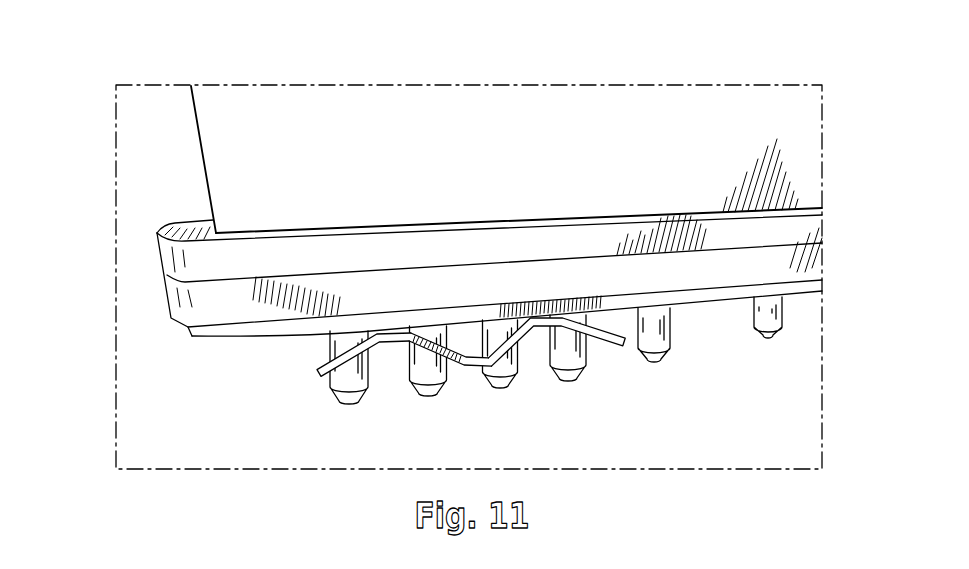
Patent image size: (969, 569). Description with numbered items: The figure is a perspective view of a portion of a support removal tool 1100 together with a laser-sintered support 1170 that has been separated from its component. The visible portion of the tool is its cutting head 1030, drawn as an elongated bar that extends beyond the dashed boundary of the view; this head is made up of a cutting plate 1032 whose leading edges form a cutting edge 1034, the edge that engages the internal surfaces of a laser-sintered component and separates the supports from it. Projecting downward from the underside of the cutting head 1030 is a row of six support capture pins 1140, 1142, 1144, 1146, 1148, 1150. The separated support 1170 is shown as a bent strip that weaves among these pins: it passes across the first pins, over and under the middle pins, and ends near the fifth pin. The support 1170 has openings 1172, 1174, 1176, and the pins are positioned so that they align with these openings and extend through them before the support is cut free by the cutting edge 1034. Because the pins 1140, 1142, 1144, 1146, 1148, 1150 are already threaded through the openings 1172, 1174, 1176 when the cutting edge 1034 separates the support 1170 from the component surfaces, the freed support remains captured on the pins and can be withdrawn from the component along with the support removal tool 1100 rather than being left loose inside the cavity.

The support removal tool 1100 is at (340, 84).
The cutting head 1030 is at (170, 260).
The cutting plate 1032 is at (173, 300).
The cutting edge 1034 is at (187, 328).
The support capture pin 1140 is at (352, 397).
The support capture pin 1142 is at (427, 392).
The support capture pin 1144 is at (500, 383).
The support capture pin 1146 is at (567, 380).
The support capture pin 1148 is at (650, 348).
The support capture pin 1150 is at (763, 323).
The support 1170 is at (427, 369).
The opening 1172 is at (323, 349).
The opening 1174 is at (467, 339).
The opening 1176 is at (602, 320).